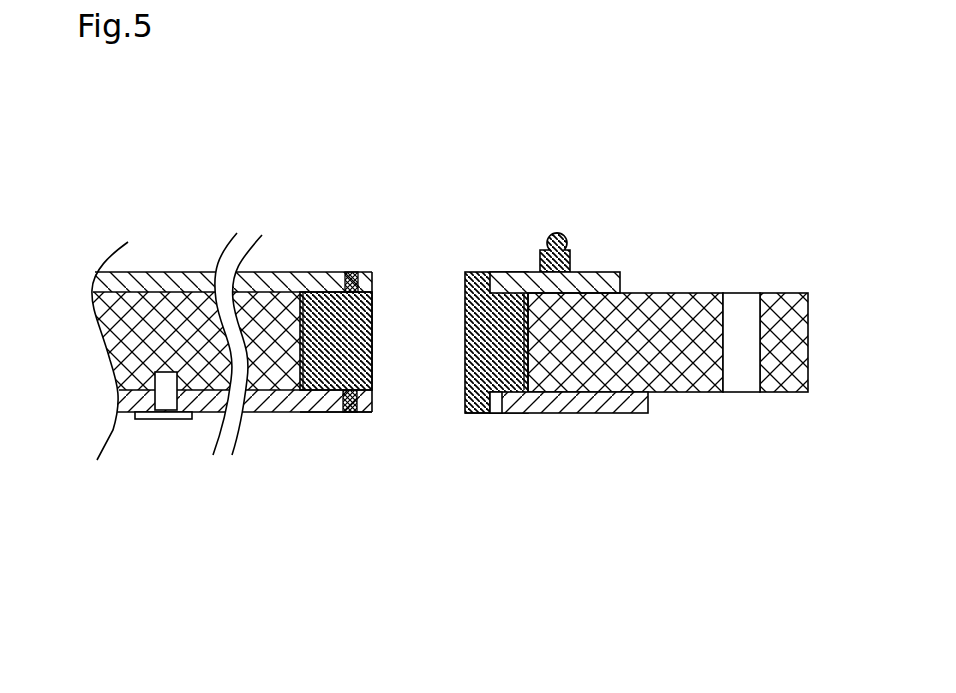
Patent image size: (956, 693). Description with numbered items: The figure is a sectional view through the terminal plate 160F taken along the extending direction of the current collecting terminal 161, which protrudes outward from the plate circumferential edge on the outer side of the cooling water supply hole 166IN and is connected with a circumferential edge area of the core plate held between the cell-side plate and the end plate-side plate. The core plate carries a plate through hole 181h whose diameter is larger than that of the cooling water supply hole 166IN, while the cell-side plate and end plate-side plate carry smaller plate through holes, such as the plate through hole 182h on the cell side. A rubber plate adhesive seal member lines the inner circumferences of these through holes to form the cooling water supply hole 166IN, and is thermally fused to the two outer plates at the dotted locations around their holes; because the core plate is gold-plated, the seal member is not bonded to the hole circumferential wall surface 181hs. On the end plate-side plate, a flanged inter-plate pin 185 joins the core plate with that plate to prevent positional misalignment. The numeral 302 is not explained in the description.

The terminal plate 160F is at (175, 139).
The current collecting terminal 161 is at (768, 392).
The plate through hole 181h is at (333, 308).
The hole circumferential wall surface 181hs is at (487, 340).
The plate through hole 182h is at (343, 296).
The inter-plate pin 185 is at (162, 417).
The projection 302 is at (545, 241).
The cooling water supply hole 166IN is at (448, 331).